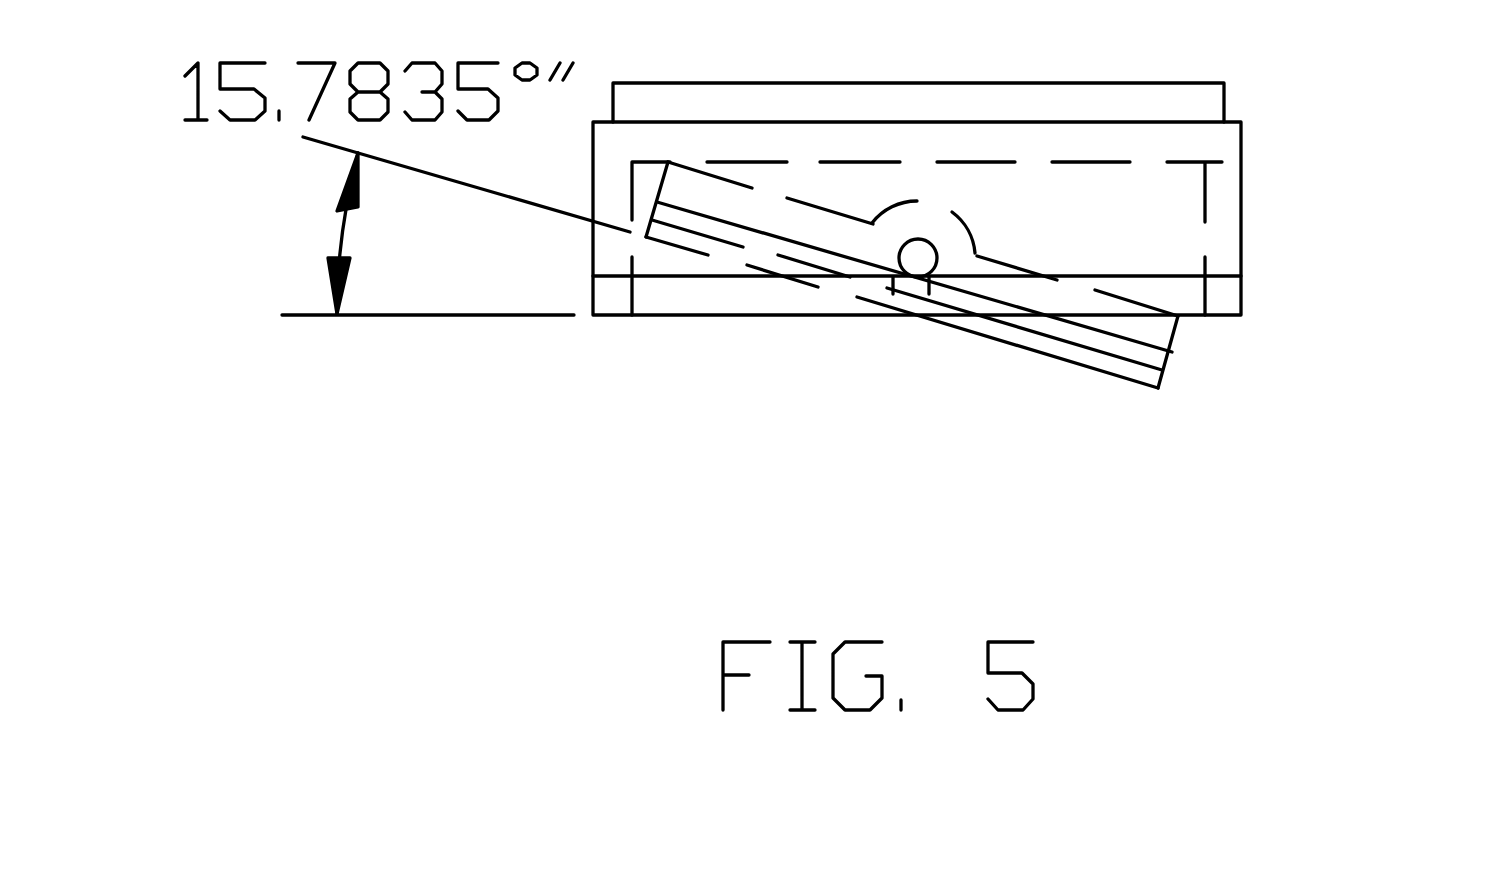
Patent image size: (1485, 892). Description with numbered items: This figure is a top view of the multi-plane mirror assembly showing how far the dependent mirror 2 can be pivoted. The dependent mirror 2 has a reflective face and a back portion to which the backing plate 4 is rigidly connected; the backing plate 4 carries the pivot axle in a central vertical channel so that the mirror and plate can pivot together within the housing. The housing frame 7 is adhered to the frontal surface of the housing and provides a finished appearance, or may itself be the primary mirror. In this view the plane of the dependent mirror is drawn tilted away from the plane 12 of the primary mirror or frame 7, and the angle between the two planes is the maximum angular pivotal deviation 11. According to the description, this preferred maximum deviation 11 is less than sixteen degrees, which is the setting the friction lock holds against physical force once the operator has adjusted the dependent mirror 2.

The dependent mirror 2 is at (1157, 388).
The backing plate 4 is at (1018, 267).
The housing frame 7 is at (1225, 315).
The maximum angular pivotal deviation 11 is at (342, 230).
The primary mirror or frame plane 12 is at (427, 315).